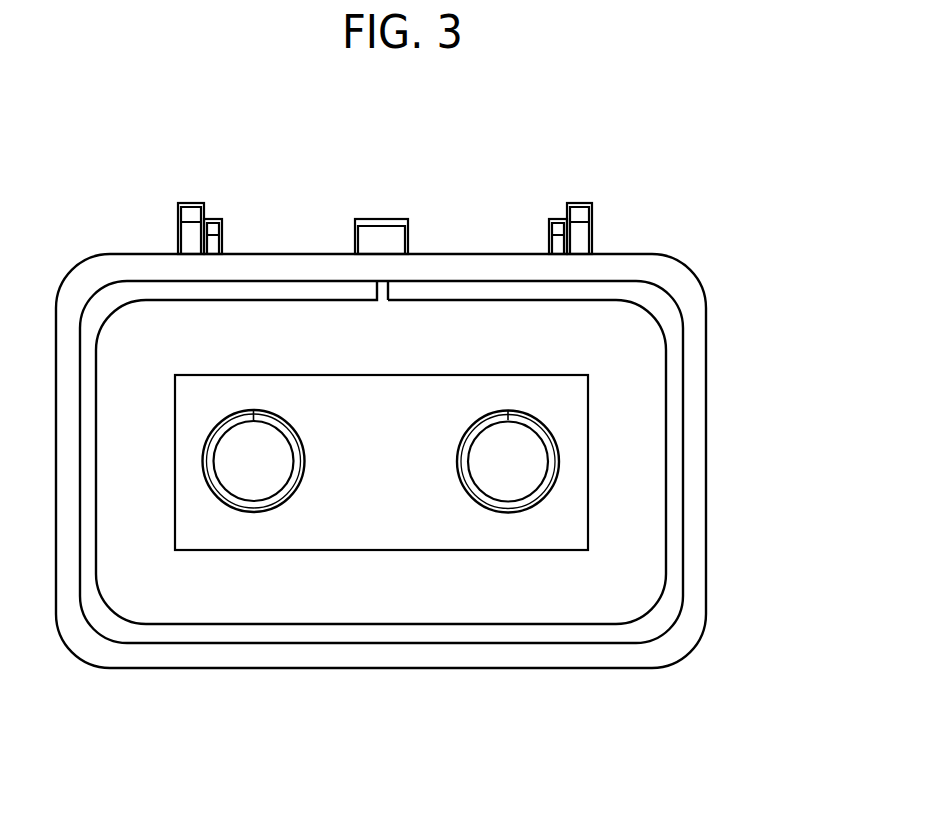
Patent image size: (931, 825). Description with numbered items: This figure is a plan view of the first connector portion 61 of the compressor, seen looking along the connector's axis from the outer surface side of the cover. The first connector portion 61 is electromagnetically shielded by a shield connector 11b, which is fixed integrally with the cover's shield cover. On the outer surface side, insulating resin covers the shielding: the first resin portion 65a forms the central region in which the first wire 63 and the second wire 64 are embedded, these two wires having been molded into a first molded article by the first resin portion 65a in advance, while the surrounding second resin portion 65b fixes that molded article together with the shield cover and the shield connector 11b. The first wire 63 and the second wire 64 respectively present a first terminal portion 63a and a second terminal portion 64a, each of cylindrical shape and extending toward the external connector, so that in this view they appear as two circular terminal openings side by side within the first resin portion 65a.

The first connector portion 61 is at (696, 254).
The shield connector 11b is at (548, 632).
The second resin portion 65b is at (212, 658).
The first resin portion 65a is at (407, 535).
The second wire 64 is at (236, 406).
The second terminal portion 64a is at (292, 437).
The first wire 63 is at (488, 411).
The first terminal portion 63a is at (460, 460).